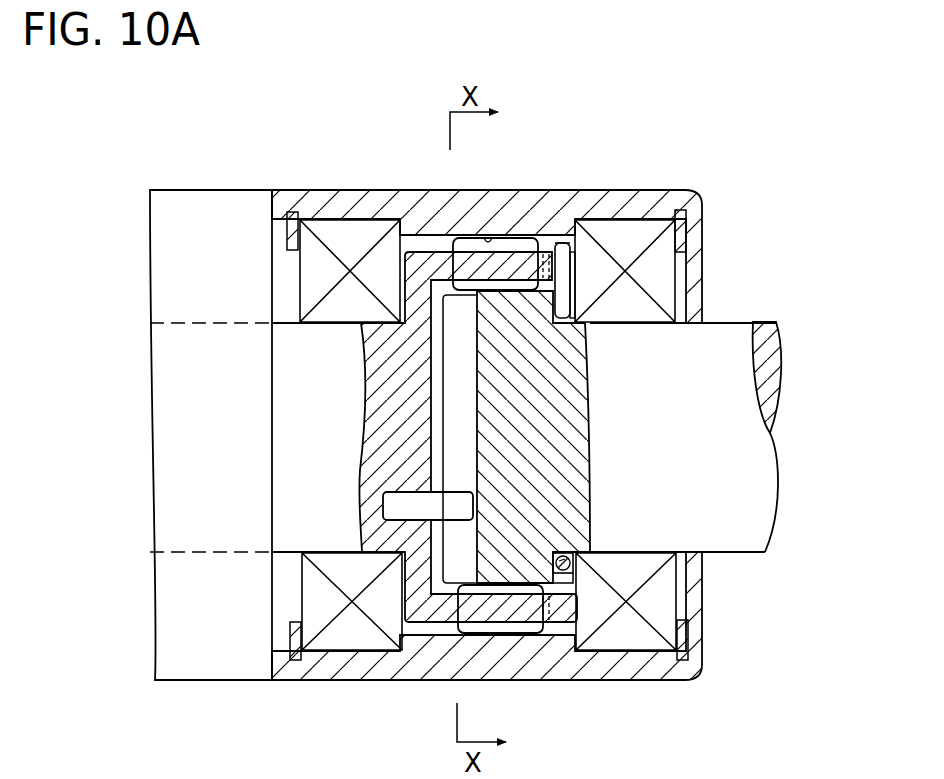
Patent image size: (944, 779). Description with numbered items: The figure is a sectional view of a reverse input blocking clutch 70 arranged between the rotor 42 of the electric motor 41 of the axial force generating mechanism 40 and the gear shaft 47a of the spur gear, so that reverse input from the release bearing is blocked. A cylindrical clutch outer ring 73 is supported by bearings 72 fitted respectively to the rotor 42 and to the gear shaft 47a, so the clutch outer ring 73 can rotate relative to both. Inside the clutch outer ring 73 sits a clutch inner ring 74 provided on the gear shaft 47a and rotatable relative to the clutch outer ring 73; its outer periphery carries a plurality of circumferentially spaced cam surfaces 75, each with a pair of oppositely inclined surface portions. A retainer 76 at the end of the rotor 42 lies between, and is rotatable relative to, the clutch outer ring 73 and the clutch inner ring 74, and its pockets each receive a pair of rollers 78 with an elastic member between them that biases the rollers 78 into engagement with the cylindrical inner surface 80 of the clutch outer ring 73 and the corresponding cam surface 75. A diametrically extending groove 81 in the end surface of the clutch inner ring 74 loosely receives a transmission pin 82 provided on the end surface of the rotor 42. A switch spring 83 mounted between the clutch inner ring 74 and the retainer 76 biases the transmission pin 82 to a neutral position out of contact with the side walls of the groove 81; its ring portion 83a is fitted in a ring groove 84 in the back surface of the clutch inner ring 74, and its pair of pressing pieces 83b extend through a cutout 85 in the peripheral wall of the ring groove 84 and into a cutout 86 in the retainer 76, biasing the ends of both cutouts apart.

The axial force generating mechanism 40 is at (148, 188).
The electric motor 41 is at (193, 202).
The rotor 42 is at (282, 358).
The gear shaft 47a is at (772, 322).
The reverse input blocking clutch 70 is at (380, 188).
The bearings 72 is at (292, 213).
The clutch outer ring 73 is at (340, 200).
The clutch inner ring 74 is at (517, 593).
The cam surfaces 75 is at (507, 600).
The retainer 76 is at (428, 256).
The rollers 78 is at (545, 243).
The cylindrical inner surface 80 is at (490, 237).
The diametrically extending groove 81 is at (452, 412).
The transmission pin 82 is at (458, 500).
The switch spring 83 is at (578, 284).
The ring portion 83a is at (577, 560).
The pressing pieces 83b is at (563, 265).
The ring groove 84 is at (573, 557).
The cutout 85 is at (573, 298).
The cutout 86 is at (558, 243).